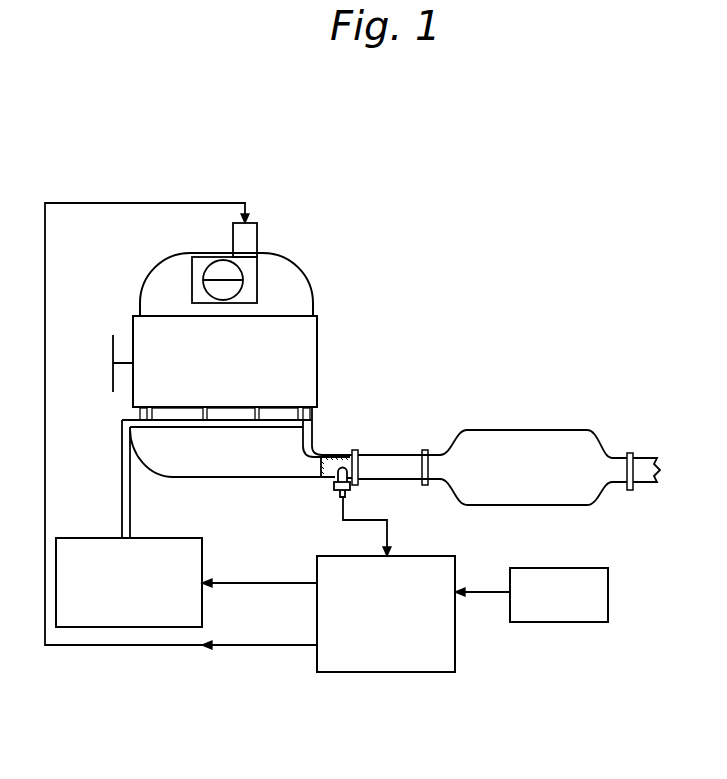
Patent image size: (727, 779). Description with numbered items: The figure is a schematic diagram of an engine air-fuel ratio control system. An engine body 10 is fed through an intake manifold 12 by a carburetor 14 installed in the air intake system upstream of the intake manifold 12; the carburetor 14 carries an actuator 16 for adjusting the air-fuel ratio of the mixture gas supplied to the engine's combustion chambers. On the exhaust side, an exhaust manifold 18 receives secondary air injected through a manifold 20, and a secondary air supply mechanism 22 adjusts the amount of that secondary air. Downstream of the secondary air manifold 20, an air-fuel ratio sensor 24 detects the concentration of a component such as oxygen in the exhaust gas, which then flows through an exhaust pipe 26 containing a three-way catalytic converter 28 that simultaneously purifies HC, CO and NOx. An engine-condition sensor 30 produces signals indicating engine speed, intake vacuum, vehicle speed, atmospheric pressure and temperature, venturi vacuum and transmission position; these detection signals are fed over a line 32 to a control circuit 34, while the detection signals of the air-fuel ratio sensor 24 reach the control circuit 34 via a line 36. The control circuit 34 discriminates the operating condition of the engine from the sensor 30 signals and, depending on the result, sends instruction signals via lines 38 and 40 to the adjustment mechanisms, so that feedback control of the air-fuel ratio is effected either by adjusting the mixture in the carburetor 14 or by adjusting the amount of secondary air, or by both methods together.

The engine body 10 is at (300, 368).
The intake manifold 12 is at (300, 297).
The carburetor 14 is at (250, 273).
The actuator 16 is at (252, 237).
The exhaust manifold 18 is at (230, 455).
The manifold for injecting secondary air 20 is at (182, 428).
The secondary air supply mechanism 22 is at (205, 560).
The air-fuel ratio sensor 24 is at (333, 488).
The exhaust pipe 26 is at (404, 452).
The catalytic converter 28 is at (528, 437).
The engine-condition sensor 30 is at (570, 625).
The sensor signal line 32 is at (490, 598).
The control circuit 34 is at (408, 675).
The line 36 is at (393, 529).
The line 38 is at (258, 586).
The line 40 is at (258, 648).